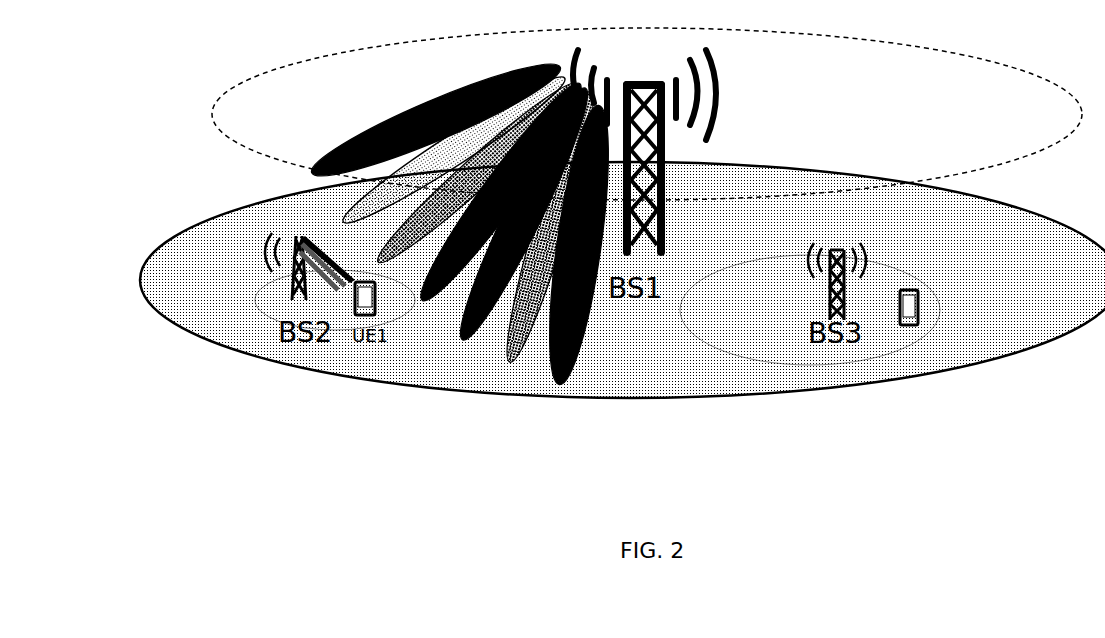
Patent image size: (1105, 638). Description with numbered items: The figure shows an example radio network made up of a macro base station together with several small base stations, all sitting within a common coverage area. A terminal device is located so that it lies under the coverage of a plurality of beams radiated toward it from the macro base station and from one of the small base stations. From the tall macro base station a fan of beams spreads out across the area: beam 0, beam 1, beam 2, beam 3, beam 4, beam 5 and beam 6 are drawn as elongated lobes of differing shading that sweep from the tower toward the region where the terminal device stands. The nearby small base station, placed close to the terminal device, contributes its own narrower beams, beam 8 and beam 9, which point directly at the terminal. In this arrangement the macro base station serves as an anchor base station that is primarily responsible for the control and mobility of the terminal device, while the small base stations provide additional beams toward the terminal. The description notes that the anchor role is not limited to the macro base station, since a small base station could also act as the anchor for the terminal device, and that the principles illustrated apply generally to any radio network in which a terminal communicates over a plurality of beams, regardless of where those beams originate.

The beam 0 is at (436, 120).
The beam 1 is at (454, 150).
The beam 2 is at (477, 173).
The beam 3 is at (501, 192).
The beam 4 is at (523, 213).
The beam 5 is at (550, 226).
The beam 6 is at (579, 244).
The beam 8 is at (323, 265).
The beam 9 is at (319, 275).